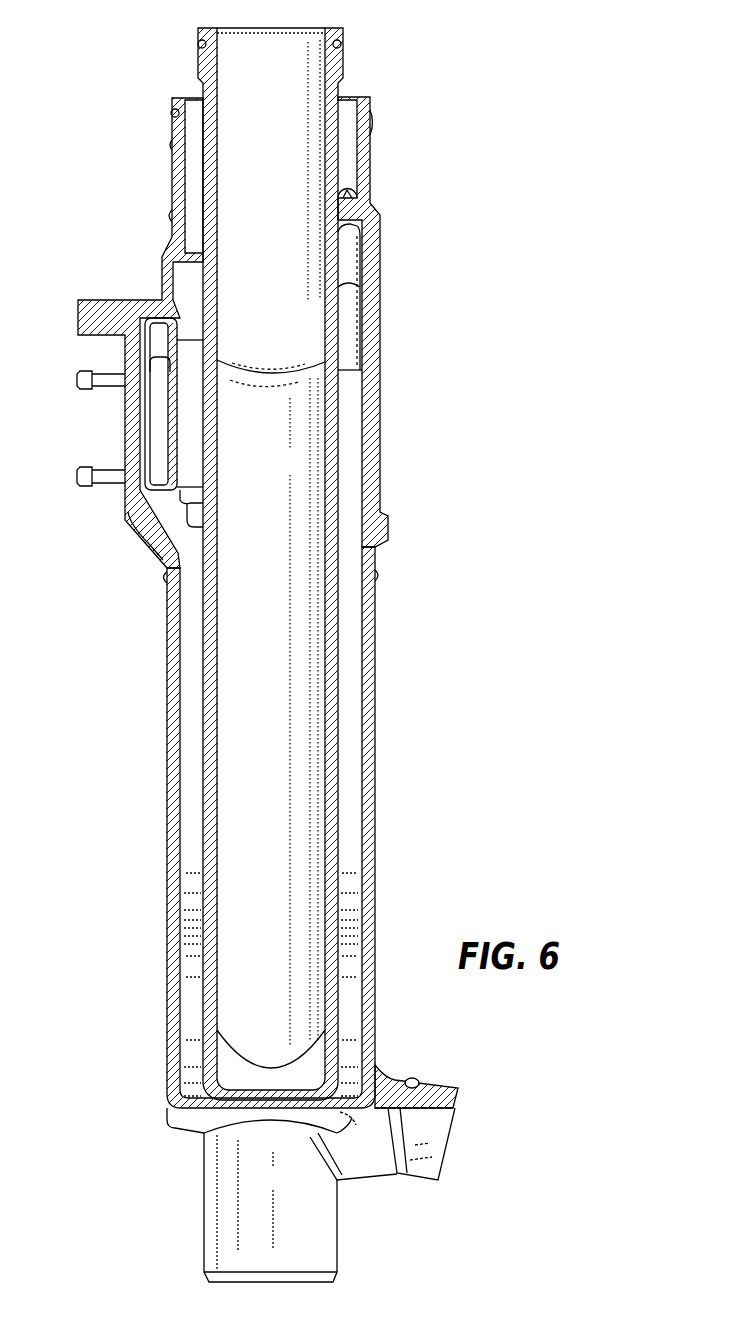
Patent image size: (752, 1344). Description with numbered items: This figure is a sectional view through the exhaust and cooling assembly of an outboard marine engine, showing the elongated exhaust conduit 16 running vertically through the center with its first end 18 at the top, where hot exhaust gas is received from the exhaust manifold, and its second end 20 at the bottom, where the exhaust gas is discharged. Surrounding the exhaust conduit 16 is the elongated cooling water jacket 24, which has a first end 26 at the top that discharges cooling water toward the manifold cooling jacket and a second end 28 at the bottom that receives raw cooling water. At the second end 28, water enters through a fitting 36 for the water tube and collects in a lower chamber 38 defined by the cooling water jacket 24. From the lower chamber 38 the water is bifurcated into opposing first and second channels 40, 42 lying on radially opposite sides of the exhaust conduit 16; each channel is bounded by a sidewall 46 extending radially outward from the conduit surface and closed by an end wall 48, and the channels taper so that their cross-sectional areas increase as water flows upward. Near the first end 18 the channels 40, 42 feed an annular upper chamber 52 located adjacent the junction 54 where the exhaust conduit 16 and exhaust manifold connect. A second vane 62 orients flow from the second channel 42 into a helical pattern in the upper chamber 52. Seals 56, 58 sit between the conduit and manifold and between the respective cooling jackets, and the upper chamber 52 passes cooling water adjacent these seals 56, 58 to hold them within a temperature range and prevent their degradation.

The exhaust conduit 16 is at (277, 750).
The first end 18 is at (404, 72).
The second end 20 is at (323, 1225).
The cooling water jacket 24 is at (168, 813).
The first end 26 is at (170, 160).
The second end 28 is at (168, 1083).
The fitting 36 is at (442, 1133).
The lower chamber 38 is at (347, 1090).
The first channel 40 is at (193, 862).
The second channel 42 is at (348, 863).
The sidewall 46 is at (193, 762).
The end wall 48 is at (167, 663).
The upper chamber 52 is at (347, 160).
The junction 54 is at (148, 66).
The seal 56 is at (342, 45).
The seal 58 is at (170, 110).
The second vane 62 is at (353, 188).